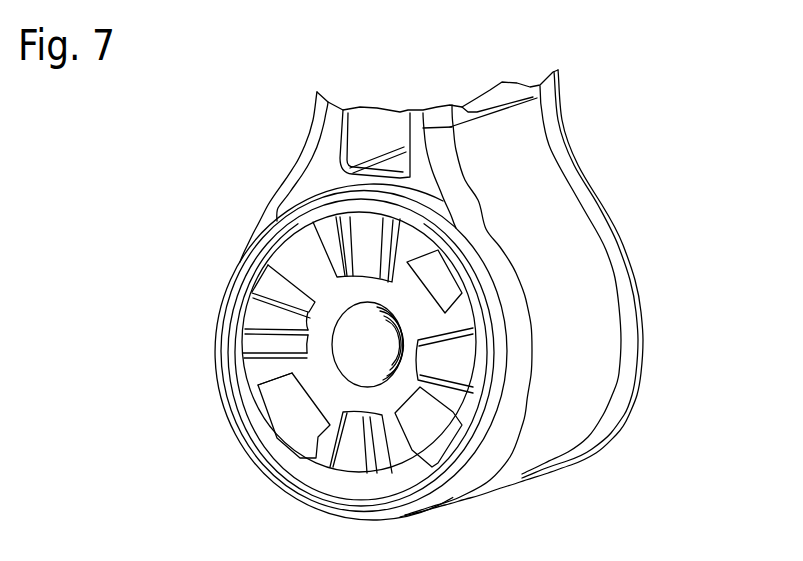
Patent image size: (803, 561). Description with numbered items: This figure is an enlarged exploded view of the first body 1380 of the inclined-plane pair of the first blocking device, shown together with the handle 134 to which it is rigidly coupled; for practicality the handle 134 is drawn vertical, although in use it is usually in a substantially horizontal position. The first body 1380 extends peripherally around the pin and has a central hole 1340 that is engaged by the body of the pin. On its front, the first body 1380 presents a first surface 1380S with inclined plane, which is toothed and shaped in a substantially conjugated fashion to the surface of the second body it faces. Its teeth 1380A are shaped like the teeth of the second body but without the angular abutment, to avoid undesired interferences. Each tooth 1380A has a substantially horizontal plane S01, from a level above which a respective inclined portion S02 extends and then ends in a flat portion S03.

The handle 134 is at (310, 117).
The first body 1380 is at (438, 275).
The teeth 1380A is at (428, 252).
The first surface with inclined plane 1380S is at (262, 248).
The plane S01 is at (278, 396).
The inclined portion S02 is at (228, 309).
The flat portion S03 is at (230, 347).
The hole 1340 is at (365, 350).